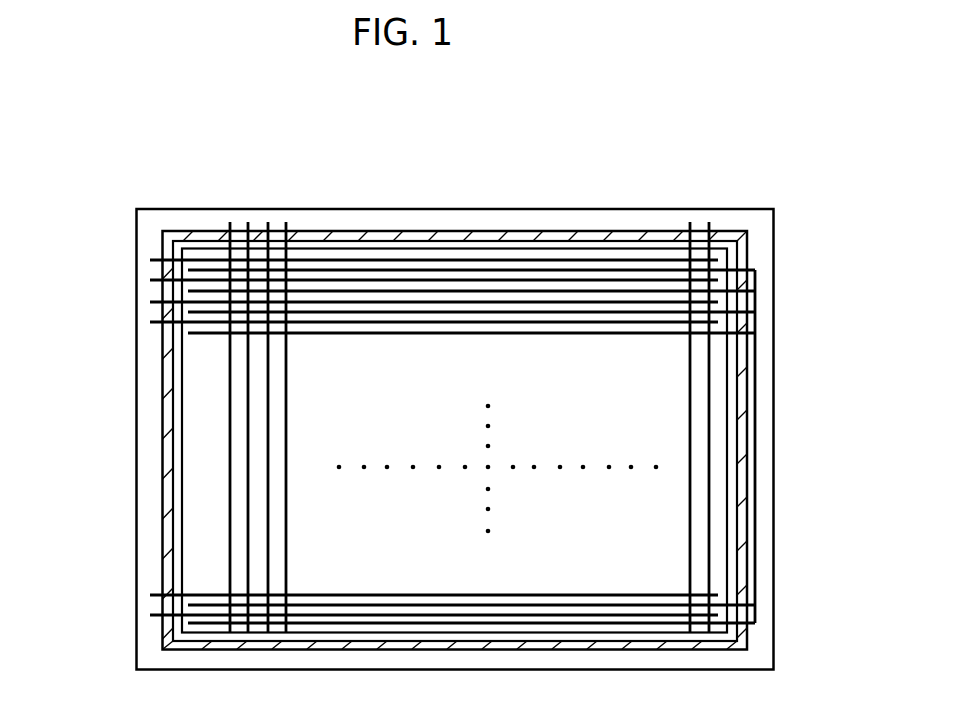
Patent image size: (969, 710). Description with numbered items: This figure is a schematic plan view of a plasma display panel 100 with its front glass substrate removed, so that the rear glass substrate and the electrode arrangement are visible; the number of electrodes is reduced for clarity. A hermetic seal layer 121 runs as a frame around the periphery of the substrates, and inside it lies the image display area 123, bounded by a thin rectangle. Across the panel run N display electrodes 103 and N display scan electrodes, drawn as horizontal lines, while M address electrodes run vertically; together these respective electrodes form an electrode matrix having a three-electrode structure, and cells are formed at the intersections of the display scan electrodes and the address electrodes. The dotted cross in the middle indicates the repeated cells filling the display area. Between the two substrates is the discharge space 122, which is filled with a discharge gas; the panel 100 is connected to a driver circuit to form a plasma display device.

The plasma display panel 100 is at (773, 463).
The hermetic seal layer 121 is at (443, 233).
The discharge space 122 is at (535, 360).
The image display area 123 is at (182, 453).
The display electrode 103 is at (198, 333).